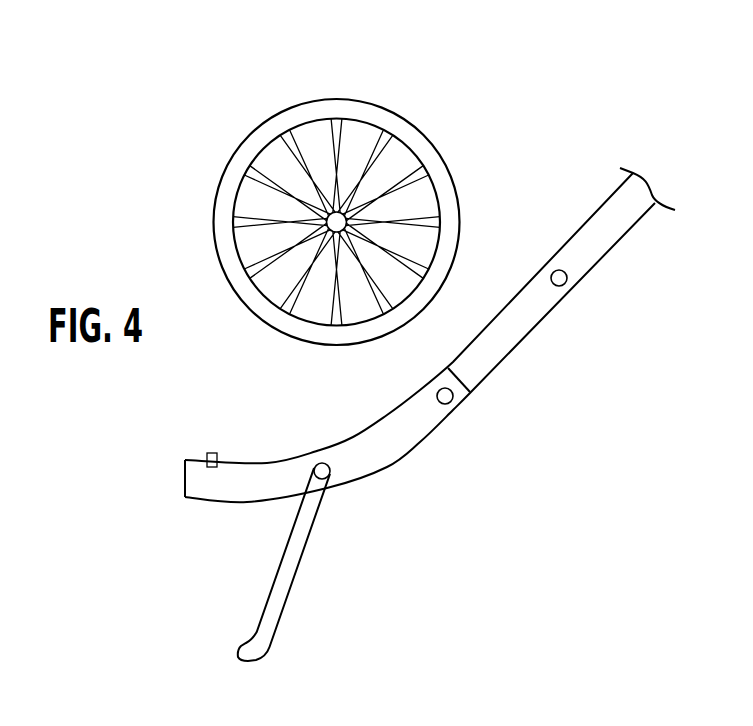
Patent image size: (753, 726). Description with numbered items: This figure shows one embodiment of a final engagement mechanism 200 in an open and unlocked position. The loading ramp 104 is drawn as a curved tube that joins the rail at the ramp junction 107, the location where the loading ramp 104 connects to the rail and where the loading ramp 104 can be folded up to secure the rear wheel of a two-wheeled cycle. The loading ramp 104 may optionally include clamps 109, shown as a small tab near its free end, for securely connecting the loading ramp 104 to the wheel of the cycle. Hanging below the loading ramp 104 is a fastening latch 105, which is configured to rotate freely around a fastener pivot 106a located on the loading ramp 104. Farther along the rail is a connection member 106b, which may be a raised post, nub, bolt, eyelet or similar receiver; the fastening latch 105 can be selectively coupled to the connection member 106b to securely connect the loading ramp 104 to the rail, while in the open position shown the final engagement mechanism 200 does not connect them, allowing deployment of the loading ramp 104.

The final engagement mechanism 200 is at (189, 119).
The loading ramp 104 is at (200, 478).
The fastening latch 105 is at (282, 592).
The fastener pivot 106a is at (331, 471).
The connection member 106b is at (567, 278).
The ramp junction 107 is at (452, 394).
The clamps 109 is at (208, 452).